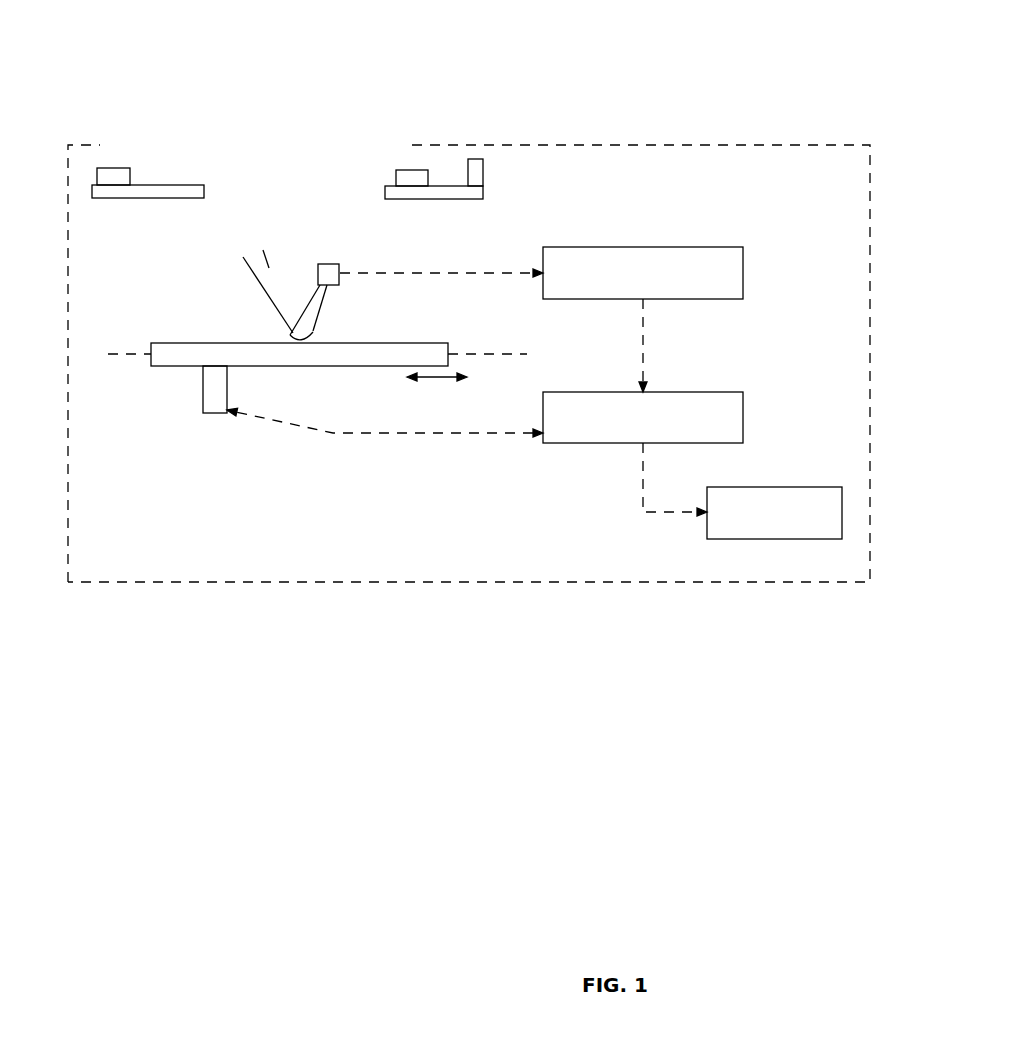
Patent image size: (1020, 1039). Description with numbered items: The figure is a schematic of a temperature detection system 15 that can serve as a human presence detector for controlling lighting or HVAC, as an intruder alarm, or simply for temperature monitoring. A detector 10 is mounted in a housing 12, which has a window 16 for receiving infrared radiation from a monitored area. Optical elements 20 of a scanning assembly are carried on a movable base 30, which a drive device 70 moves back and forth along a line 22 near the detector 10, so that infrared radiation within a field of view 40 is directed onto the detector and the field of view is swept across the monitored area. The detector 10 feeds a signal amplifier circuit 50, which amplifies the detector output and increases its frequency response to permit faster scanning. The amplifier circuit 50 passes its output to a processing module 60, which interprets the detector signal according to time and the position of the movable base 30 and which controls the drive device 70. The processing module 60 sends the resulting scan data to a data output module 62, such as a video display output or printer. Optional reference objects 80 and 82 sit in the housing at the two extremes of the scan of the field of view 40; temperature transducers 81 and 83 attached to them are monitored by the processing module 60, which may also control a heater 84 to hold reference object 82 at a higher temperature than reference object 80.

The detector 10 is at (318, 264).
The housing 12 is at (565, 582).
The temperature detection system 15 is at (648, 132).
The window 16 is at (277, 168).
The optical elements 20 is at (287, 335).
The line 22 is at (480, 357).
The movable base 30 is at (168, 366).
The field of view 40 is at (313, 332).
The signal amplifier circuit 50 is at (643, 247).
The processing module 60 is at (558, 443).
The data output module 62 is at (775, 539).
The drive device 70 is at (215, 413).
The reference object 80 is at (150, 198).
The temperature transducer 81 is at (115, 167).
The reference object 82 is at (434, 200).
The temperature transducer 83 is at (413, 170).
The heater 84 is at (483, 172).